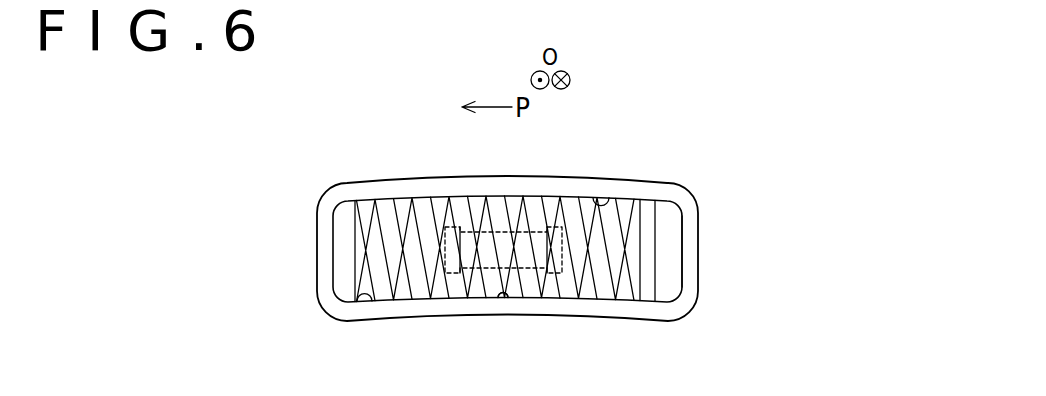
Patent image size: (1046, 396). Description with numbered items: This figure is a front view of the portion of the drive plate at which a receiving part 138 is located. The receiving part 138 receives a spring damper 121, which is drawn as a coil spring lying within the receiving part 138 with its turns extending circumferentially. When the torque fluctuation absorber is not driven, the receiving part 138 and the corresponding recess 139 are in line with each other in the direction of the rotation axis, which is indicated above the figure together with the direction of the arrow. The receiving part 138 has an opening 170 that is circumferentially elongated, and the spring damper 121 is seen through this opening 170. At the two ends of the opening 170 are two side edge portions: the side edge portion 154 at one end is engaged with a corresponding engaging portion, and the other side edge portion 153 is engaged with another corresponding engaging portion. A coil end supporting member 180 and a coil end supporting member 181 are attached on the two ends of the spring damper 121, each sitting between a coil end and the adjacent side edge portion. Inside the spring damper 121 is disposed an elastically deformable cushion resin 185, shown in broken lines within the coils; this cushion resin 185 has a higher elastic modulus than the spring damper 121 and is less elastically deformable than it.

The spring damper 121 is at (543, 207).
The receiving part 138 is at (512, 297).
The recess 139 is at (503, 295).
The side edge portion 153 is at (337, 255).
The side edge portion 154 is at (668, 252).
The opening 170 is at (608, 203).
The coil end supporting member 180 is at (665, 223).
The coil end supporting member 181 is at (345, 223).
The cushion resin 185 is at (450, 242).